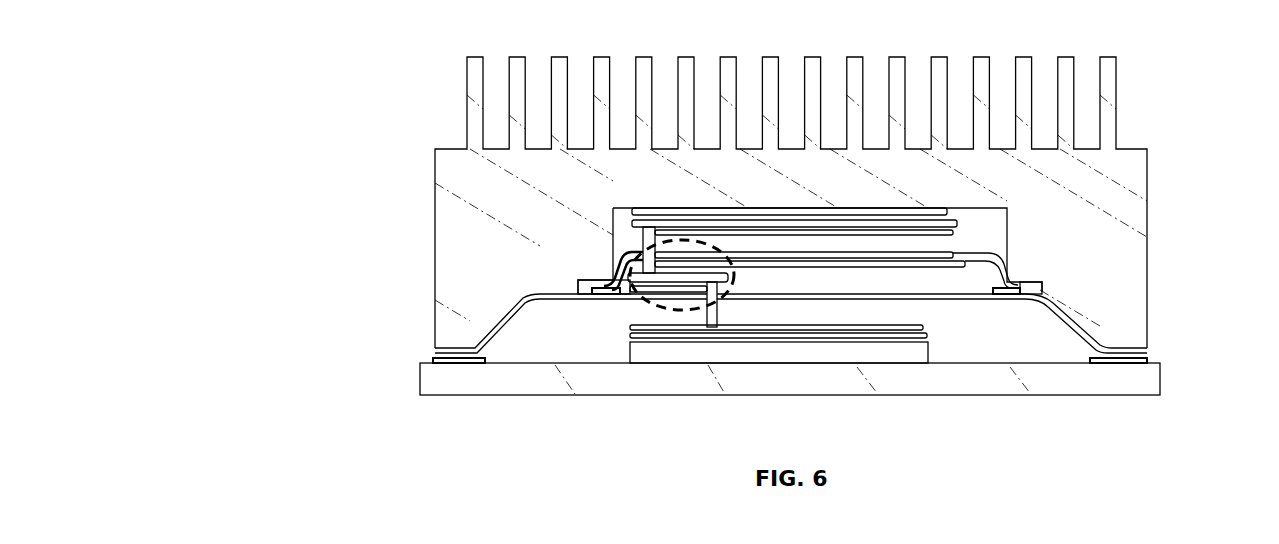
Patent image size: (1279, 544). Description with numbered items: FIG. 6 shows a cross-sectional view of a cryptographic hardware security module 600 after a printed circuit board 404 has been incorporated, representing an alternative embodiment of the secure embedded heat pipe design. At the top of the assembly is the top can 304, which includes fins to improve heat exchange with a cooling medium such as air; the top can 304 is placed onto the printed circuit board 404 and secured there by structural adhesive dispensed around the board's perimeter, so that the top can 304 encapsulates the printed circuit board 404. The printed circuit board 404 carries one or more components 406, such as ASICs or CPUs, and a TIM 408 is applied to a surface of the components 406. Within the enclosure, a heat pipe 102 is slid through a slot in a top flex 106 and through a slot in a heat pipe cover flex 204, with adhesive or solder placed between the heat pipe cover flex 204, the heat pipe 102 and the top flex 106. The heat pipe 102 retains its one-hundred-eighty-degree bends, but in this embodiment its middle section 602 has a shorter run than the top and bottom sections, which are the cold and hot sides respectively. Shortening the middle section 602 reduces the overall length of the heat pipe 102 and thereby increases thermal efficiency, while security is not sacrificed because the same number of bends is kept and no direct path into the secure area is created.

The cryptographic hardware security module 600 is at (316, 32).
The top can 304 is at (472, 75).
The heat pipe 102 is at (628, 226).
The middle section 602 is at (635, 255).
The top flex 106 is at (1073, 320).
The heat pipe cover flex 204 is at (973, 258).
The components 406 is at (770, 355).
The TIM 408 is at (838, 342).
The printed circuit board 404 is at (487, 380).